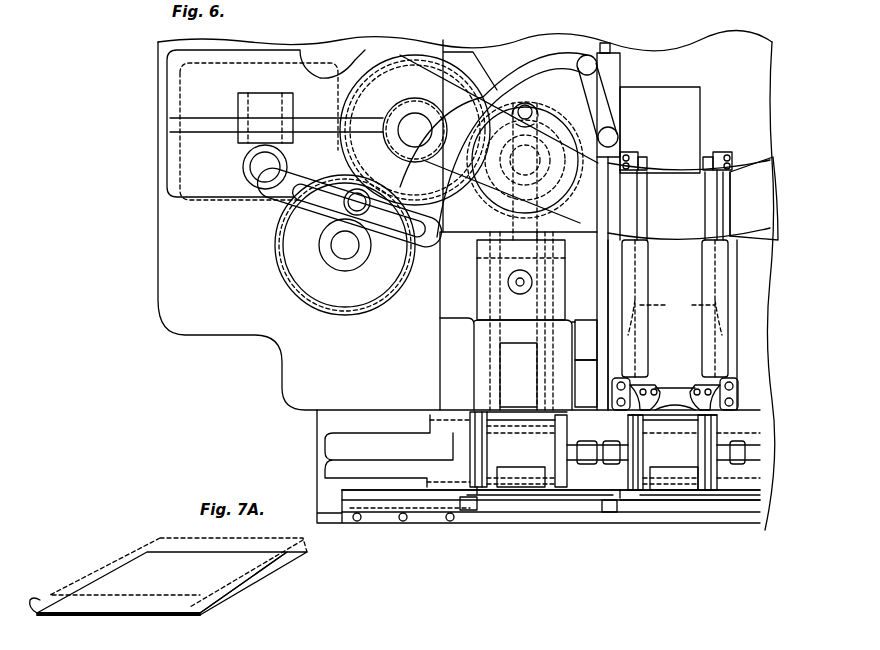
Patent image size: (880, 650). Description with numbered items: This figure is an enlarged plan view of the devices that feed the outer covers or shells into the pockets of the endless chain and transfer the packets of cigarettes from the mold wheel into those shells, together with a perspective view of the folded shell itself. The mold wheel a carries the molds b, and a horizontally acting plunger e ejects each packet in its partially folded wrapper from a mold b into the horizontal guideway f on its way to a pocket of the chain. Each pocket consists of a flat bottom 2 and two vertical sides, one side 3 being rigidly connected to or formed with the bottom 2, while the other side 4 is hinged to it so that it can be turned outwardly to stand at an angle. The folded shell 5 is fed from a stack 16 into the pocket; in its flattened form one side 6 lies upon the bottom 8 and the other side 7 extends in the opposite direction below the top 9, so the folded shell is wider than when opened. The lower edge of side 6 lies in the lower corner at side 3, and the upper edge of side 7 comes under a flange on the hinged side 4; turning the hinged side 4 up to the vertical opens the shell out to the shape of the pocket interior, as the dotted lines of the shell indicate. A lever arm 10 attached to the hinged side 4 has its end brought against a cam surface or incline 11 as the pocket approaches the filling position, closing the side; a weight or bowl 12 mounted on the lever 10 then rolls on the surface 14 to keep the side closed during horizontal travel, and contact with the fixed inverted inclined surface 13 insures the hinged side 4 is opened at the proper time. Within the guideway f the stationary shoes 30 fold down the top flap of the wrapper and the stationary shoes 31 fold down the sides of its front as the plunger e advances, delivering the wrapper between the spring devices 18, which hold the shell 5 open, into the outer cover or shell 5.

In FIG. 6, the horizontally acting plunger e is at (690, 118).
In FIG. 6, the clamp bracket u is at (715, 155).
In FIG. 6, the mold b is at (689, 199).
In FIG. 6, the mold wheel a is at (754, 198).
In FIG. 6, the stationary shoes 30 is at (702, 256).
In FIG. 6, the stationary shoes 31 is at (677, 307).
In FIG. 6, the horizontal guideway f is at (690, 283).
In FIG. 6, the spring devices 18 is at (700, 390).
In FIG. 6, the stack 16 is at (515, 366).
In FIG. 6, the hinged side 4 is at (470, 440).
In FIG. 6, the flat bottom 2 is at (623, 451).
In FIG. 6, the vertical side 3 is at (567, 448).
In FIG. 6, the top 9 is at (595, 465).
In FIG. 7A, the top 9 is at (190, 538).
In FIG. 6, the fixed inverted inclined surface 13 is at (360, 505).
In FIG. 6, the cam surface or incline 11 is at (545, 505).
In FIG. 6, the surface 14 is at (700, 510).
In FIG. 6, the lever arm 10 is at (477, 496).
In FIG. 6, the weight or bowl 12 is at (465, 510).
In FIG. 7A, the outer cover or shell 5 is at (162, 582).
In FIG. 7A, the side of shell 7 is at (42, 603).
In FIG. 7A, the side of shell 6 is at (305, 548).
In FIG. 7A, the bottom of shell 8 is at (148, 615).